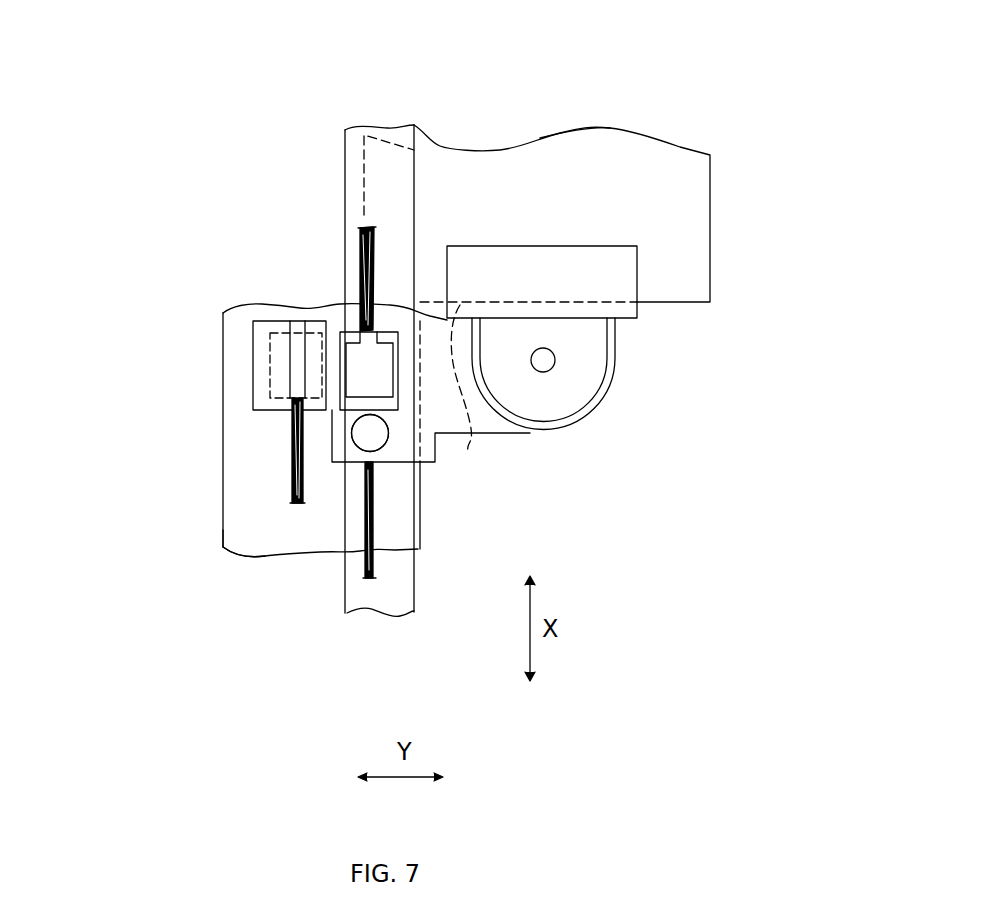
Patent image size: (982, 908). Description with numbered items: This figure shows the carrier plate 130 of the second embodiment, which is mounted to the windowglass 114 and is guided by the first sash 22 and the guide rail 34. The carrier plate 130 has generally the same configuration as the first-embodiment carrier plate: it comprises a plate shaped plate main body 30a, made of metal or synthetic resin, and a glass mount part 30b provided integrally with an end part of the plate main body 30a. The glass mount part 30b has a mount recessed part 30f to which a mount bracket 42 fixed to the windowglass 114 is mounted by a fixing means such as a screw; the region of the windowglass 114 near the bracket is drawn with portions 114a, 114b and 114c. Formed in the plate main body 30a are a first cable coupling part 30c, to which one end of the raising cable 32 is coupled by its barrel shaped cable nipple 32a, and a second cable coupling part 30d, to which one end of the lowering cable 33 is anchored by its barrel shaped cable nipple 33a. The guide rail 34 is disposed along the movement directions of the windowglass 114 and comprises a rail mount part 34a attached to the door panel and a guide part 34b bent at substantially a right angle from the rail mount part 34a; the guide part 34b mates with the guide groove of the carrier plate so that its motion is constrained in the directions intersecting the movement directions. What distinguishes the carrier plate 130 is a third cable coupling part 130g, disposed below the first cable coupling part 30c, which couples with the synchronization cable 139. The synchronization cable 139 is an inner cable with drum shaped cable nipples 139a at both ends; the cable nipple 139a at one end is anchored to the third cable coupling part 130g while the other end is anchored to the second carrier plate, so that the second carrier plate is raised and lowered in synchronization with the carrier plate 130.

The first sash 22 is at (345, 175).
The windowglass 114 is at (558, 120).
The hidden portion of base member 114a is at (363, 213).
The upper portion of base member 114b is at (575, 183).
The hidden wall of base member 114c is at (481, 394).
The mount bracket 42 is at (613, 283).
The guide rail 34 is at (212, 472).
The rail mount part 34a is at (270, 498).
The guide part 34b is at (420, 500).
The raising cable 32 is at (356, 262).
The cable nipple 32a is at (365, 368).
The plate main body 30a is at (250, 327).
The glass mount part 30b is at (603, 414).
The first cable coupling part 30c is at (383, 425).
The second cable coupling part 30d is at (273, 335).
The mount recessed part 30f is at (592, 415).
The lowering cable 33 is at (283, 446).
The cable nipple 33a is at (265, 380).
The synchronization cable 139 is at (370, 436).
The cable nipple 139a is at (362, 547).
The carrier plate 130 is at (555, 445).
The third cable coupling part 130g is at (372, 438).